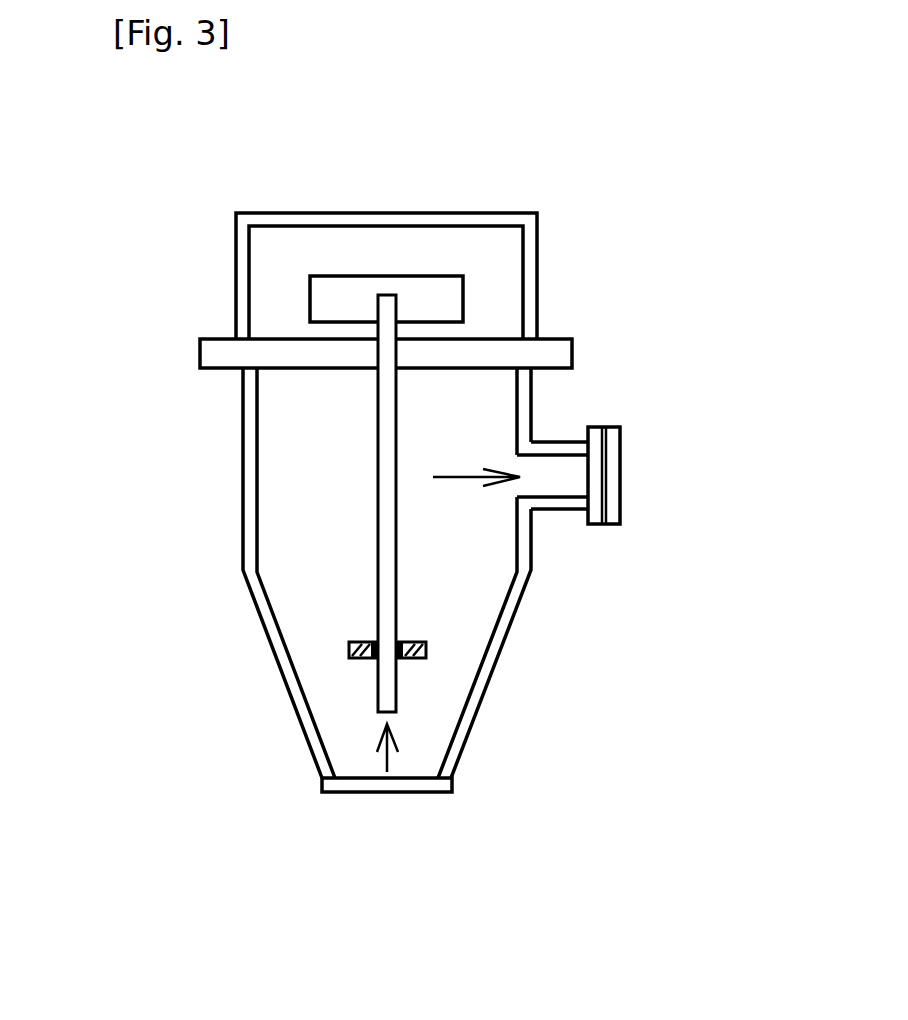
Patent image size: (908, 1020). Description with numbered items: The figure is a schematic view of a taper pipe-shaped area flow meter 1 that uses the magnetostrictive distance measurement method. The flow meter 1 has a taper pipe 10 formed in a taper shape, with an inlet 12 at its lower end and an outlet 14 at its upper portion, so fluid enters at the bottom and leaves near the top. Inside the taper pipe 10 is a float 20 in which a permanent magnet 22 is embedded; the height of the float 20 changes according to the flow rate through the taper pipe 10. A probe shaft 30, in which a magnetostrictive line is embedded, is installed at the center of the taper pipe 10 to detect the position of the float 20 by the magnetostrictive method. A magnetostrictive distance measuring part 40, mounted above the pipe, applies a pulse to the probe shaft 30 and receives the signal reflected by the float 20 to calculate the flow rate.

The taper pipe-shaped area flow meter 1 is at (428, 119).
The taper pipe 10 is at (297, 685).
The inlet 12 is at (433, 793).
The outlet 14 is at (530, 475).
The float 20 is at (426, 648).
The permanent magnet 22 is at (375, 658).
The probe shaft 30 is at (378, 500).
The magnetostrictive distance measuring part 40 is at (463, 300).